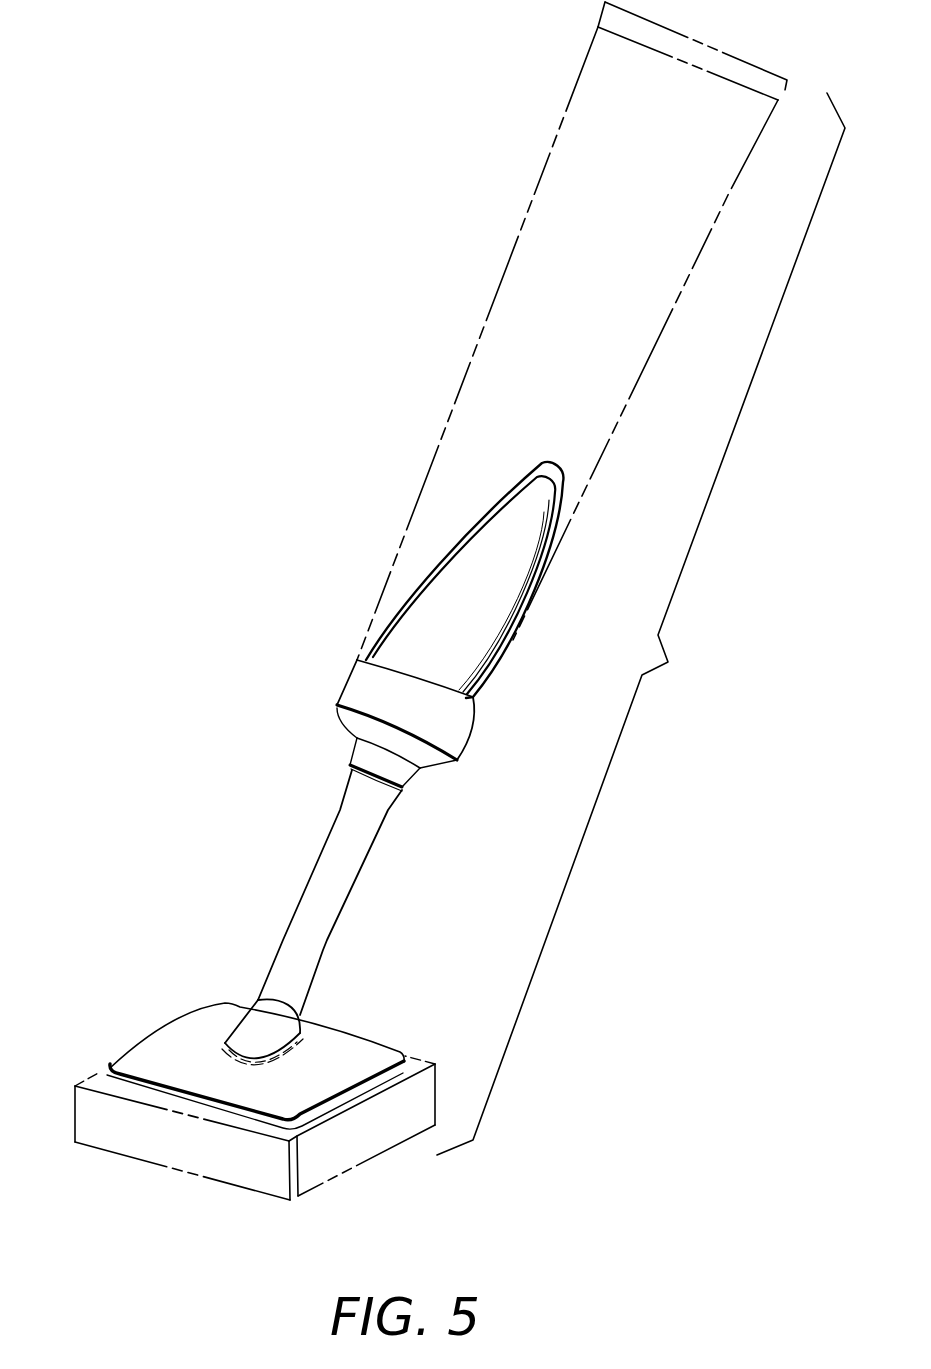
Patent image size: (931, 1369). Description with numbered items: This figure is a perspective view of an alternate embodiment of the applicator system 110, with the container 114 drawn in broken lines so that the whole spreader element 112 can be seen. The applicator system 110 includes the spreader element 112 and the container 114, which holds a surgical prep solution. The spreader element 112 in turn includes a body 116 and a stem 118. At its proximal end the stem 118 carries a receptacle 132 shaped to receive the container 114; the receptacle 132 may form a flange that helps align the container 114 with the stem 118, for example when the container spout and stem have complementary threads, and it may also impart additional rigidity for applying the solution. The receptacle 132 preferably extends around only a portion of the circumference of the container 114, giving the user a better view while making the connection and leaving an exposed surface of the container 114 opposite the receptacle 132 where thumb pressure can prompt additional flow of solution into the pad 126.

The applicator system 110 is at (641, 624).
The spreader element 112 is at (261, 881).
The container 114 is at (500, 277).
The body 116 is at (348, 1047).
The stem 118 is at (350, 890).
The pad 126 is at (345, 1157).
The receptacle 132 is at (487, 695).